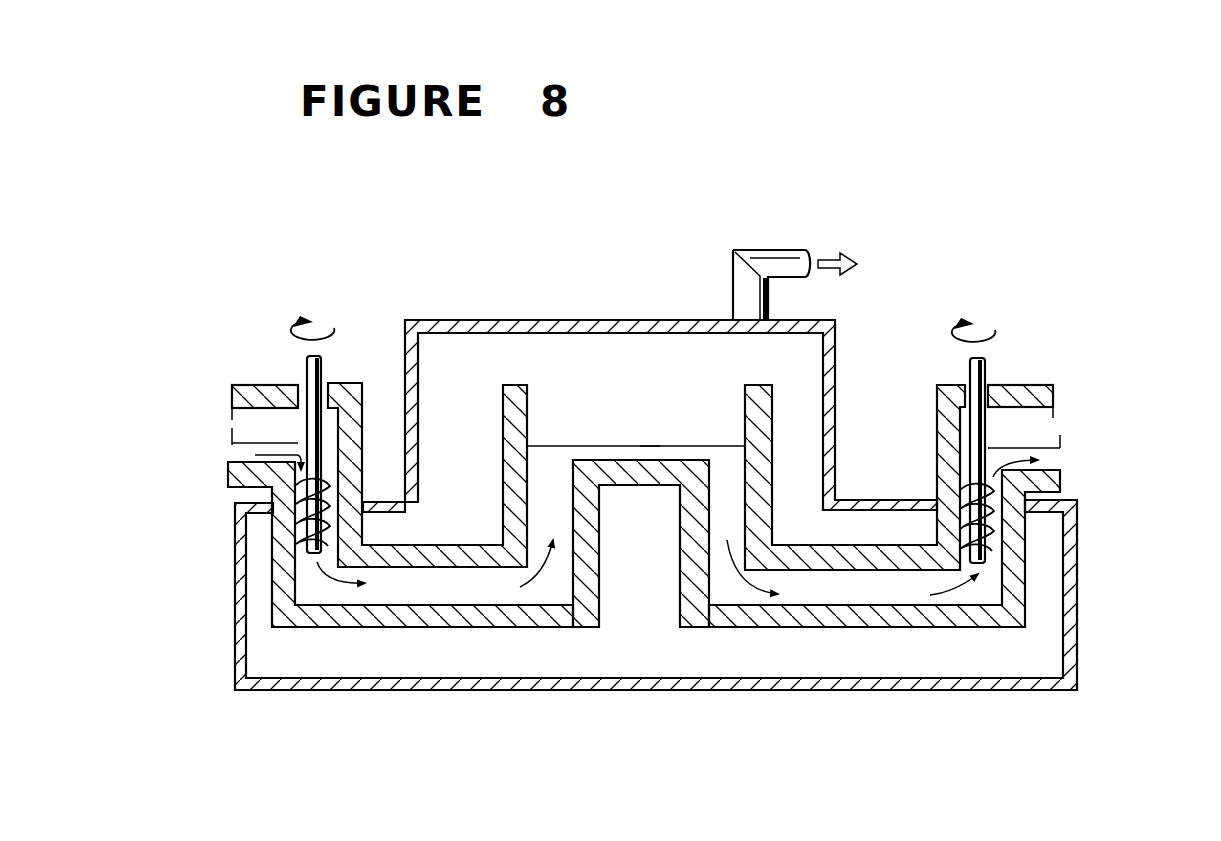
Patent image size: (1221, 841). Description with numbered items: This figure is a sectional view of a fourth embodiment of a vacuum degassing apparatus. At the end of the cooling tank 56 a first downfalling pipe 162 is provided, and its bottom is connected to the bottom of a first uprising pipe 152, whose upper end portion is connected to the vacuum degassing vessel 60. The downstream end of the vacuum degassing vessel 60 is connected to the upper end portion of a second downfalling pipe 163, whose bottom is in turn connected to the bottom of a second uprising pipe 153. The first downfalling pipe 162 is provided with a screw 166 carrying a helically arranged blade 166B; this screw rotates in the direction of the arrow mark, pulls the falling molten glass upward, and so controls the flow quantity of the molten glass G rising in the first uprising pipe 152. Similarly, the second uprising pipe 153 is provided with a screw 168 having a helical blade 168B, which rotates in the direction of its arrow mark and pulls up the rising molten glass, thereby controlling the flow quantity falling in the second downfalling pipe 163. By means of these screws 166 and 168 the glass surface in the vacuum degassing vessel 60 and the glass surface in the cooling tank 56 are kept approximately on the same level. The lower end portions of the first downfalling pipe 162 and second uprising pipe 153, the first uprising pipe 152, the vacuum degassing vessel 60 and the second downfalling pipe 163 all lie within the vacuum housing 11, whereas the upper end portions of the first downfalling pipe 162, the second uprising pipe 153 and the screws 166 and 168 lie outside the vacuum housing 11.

The vacuum housing 11 is at (530, 320).
The cooling tank 56 is at (253, 400).
The vacuum degassing vessel 60 is at (655, 432).
The molten glass G is at (547, 475).
The first uprising pipe 152 is at (503, 483).
The second uprising pipe 153 is at (1012, 570).
The first downfalling pipe 162 is at (277, 577).
The second downfalling pipe 163 is at (697, 552).
The screw 166 is at (318, 362).
The blade 166B is at (300, 512).
The screw 168 is at (970, 375).
The helical blade 168B is at (997, 515).